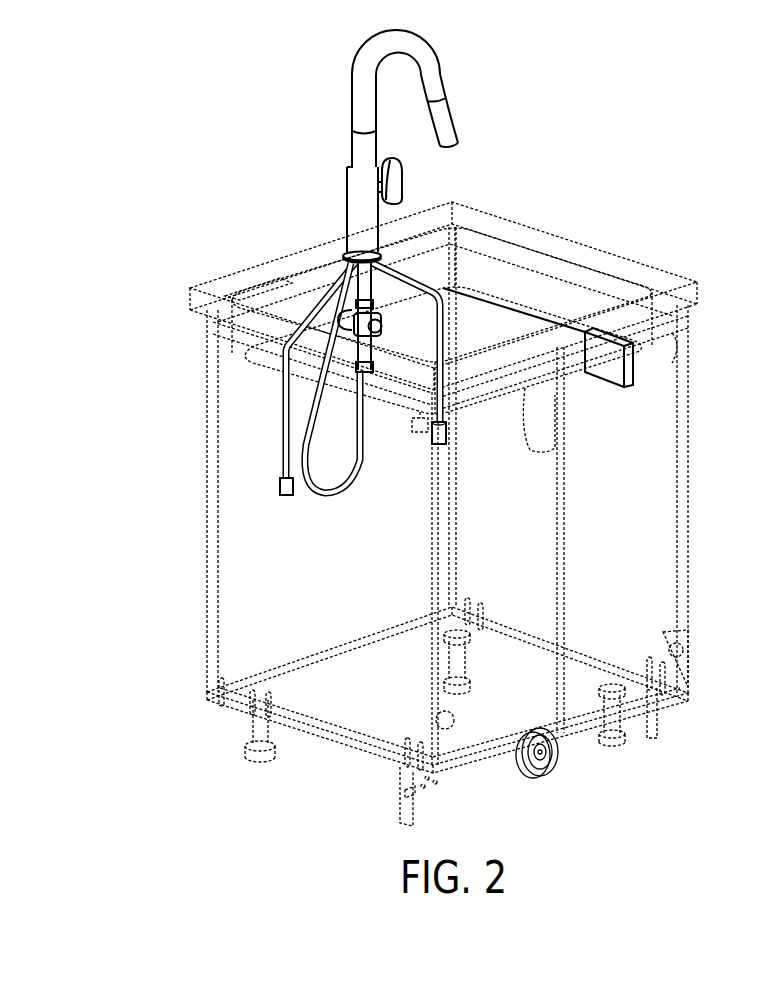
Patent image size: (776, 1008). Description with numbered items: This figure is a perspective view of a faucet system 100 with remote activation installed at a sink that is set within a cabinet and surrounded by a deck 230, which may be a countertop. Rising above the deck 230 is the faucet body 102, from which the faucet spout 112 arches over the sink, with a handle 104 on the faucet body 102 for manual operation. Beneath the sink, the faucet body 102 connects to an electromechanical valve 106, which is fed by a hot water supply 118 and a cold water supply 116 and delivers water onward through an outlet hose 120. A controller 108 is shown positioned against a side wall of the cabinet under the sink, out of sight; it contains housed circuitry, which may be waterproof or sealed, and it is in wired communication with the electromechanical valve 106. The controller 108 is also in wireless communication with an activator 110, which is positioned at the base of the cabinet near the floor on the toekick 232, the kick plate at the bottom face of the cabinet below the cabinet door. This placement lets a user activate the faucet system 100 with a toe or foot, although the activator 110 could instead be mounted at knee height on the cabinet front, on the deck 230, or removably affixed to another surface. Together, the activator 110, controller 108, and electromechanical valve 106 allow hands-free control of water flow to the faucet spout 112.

The faucet system 100 is at (100, 114).
The faucet body 102 is at (368, 167).
The handle 104 is at (398, 194).
The electromechanical valve 106 is at (372, 323).
The controller 108 is at (620, 370).
The activator 110 is at (553, 757).
The faucet spout 112 is at (450, 78).
The cold water supply 116 is at (440, 388).
The hot water supply 118 is at (285, 375).
The outlet hose 120 is at (320, 475).
The deck 230 is at (262, 288).
The toekick 232 is at (440, 800).